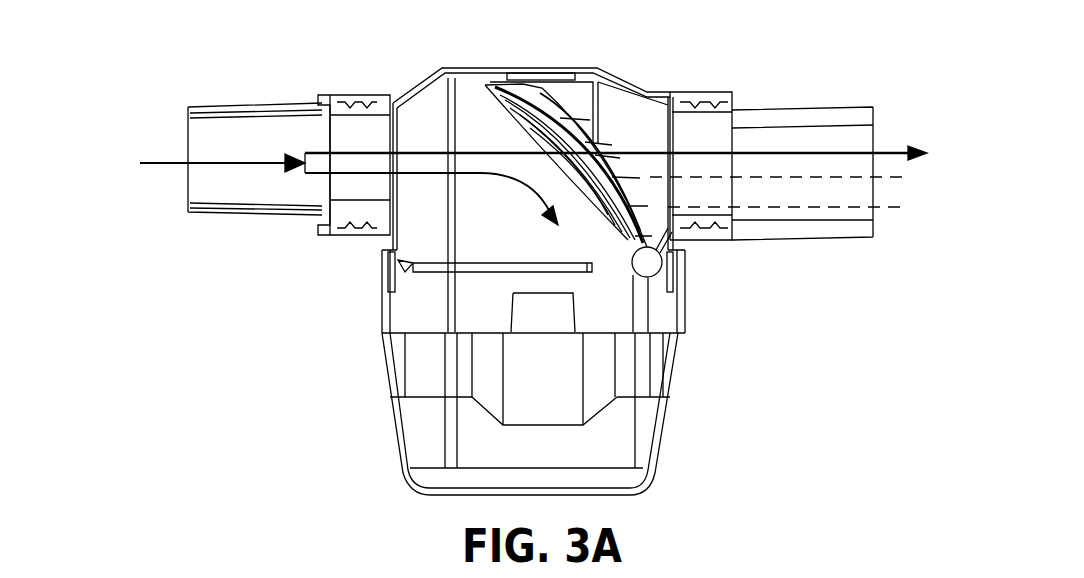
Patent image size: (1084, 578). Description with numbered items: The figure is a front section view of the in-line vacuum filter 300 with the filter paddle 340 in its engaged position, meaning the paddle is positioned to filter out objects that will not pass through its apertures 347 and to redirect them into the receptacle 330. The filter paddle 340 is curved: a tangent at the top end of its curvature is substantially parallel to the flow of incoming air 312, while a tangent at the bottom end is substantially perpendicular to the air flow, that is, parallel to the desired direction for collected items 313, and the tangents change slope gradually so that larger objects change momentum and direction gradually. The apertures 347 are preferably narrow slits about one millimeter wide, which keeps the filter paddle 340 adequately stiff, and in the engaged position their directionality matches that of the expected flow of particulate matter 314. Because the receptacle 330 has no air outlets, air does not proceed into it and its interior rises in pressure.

The in-line vacuum filter 300 is at (86, 92).
The flow of incoming air 312 is at (155, 166).
The desired direction for collected items 313 is at (478, 175).
The expected flow of particulate matter 314 is at (893, 148).
The receptacle 330 is at (592, 440).
The filter paddle 340 is at (542, 107).
The apertures 347 is at (587, 132).